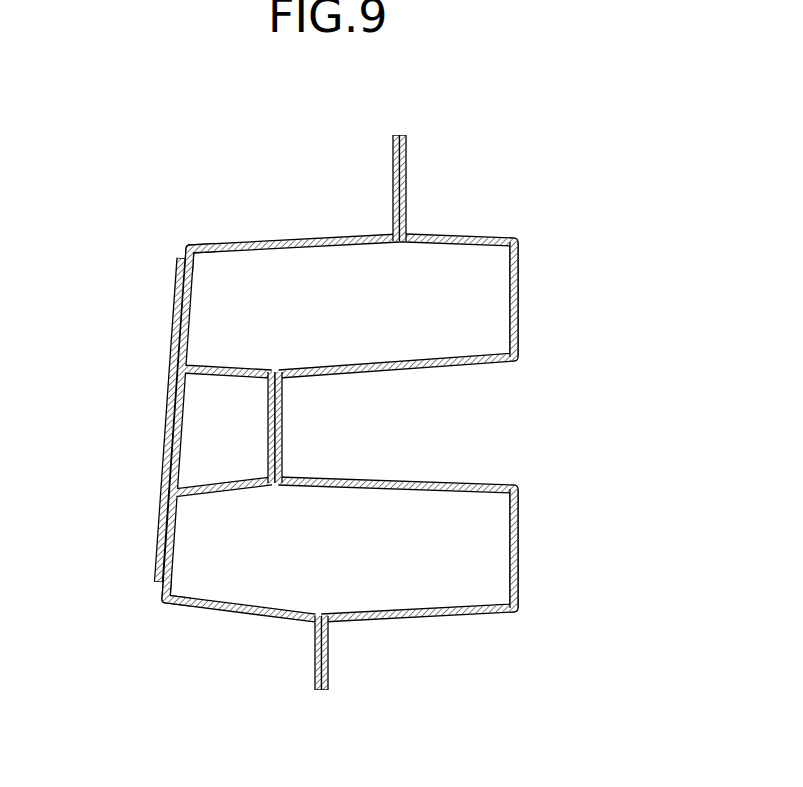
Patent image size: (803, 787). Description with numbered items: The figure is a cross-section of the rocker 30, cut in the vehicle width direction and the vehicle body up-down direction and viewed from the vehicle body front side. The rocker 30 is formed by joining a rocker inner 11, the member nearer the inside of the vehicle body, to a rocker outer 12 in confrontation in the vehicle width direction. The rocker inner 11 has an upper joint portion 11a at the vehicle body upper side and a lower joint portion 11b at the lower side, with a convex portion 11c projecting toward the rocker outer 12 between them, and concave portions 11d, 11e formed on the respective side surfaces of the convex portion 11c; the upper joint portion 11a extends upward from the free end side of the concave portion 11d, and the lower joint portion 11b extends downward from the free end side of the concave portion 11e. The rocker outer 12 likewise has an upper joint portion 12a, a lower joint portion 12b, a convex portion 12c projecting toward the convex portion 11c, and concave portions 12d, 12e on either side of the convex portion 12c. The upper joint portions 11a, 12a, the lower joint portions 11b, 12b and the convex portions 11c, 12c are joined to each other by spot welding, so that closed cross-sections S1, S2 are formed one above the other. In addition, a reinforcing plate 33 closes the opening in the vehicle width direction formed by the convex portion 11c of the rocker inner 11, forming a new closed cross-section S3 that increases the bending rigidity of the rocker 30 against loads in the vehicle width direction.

The rocker 30 is at (104, 170).
The rocker inner 11 is at (263, 244).
The upper joint portion 11a is at (393, 177).
The lower joint portion 11b is at (315, 662).
The convex portion 11c is at (268, 432).
The concave portion 11d is at (186, 262).
The concave portion 11e is at (163, 587).
The rocker outer 12 is at (458, 236).
The upper joint portion 12a is at (406, 165).
The lower joint portion 12b is at (328, 665).
The convex portion 12c is at (282, 432).
The concave portion 12d is at (518, 292).
The concave portion 12e is at (518, 545).
The reinforcing plate 33 is at (166, 422).
The closed cross-section S1 is at (481, 328).
The closed cross-section S2 is at (481, 579).
The closed cross-section S3 is at (198, 471).